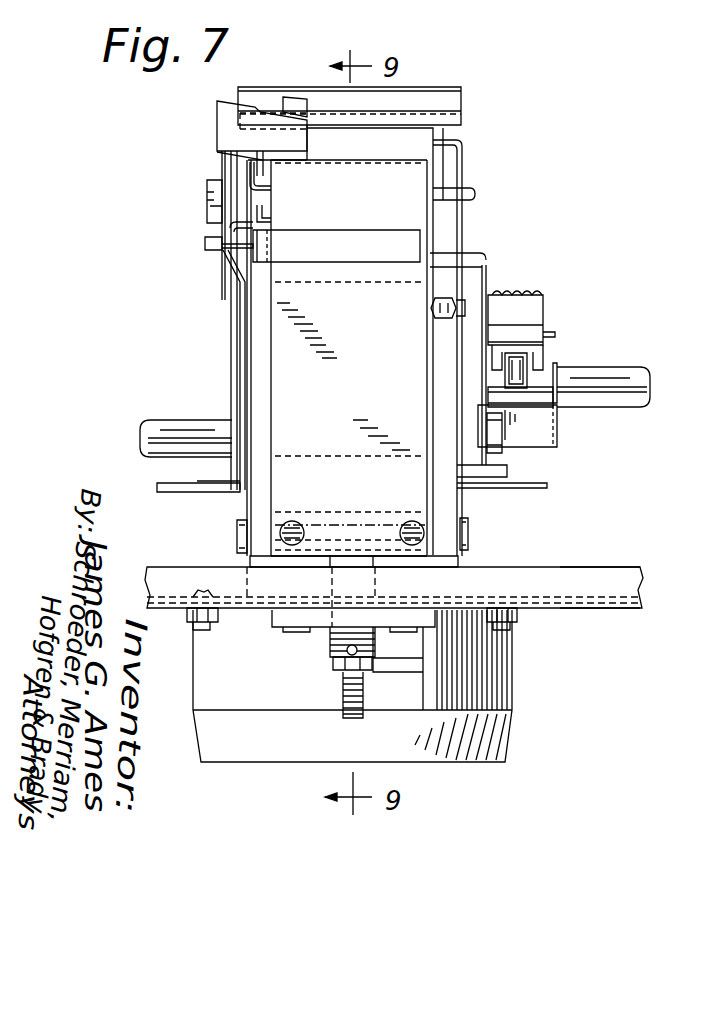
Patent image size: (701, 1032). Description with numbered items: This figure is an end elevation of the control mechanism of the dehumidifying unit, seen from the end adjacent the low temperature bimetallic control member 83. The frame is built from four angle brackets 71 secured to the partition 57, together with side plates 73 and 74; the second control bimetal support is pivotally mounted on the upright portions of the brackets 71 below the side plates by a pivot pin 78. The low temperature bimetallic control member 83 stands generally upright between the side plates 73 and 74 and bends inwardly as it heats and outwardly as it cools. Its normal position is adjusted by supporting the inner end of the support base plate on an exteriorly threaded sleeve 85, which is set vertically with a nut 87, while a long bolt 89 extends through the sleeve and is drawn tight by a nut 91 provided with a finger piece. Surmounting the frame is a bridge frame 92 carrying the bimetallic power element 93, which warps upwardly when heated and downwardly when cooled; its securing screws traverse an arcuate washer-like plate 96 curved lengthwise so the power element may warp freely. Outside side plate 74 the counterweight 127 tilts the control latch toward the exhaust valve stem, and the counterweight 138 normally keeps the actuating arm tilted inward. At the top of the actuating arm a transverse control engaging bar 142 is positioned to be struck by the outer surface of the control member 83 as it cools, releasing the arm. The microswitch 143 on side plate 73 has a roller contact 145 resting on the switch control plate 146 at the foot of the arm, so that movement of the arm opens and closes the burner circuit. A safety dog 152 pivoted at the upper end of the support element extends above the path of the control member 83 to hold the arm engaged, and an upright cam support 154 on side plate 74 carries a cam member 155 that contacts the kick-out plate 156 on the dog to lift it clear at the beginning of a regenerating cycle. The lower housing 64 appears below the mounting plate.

The partition 57 is at (593, 608).
The housing 64 is at (460, 758).
The brackets 71 is at (248, 566).
The side plate 73 is at (463, 472).
The side plate 74 is at (238, 477).
The pivot pin 78 is at (470, 532).
The low temperature bimetallic control member 83 is at (378, 177).
The exteriorly threaded sleeve 85 is at (330, 651).
The nut 87 is at (322, 624).
The long bolt 89 is at (345, 715).
The nut 91 is at (389, 668).
The bridge frame 92 is at (463, 152).
The bimetallic power element 93 is at (420, 154).
The arcuate washer-like plate 96 is at (448, 104).
The counterweight 127 is at (203, 390).
The counterweight 138 is at (625, 373).
The control engaging bar 142 is at (410, 241).
The microswitch 143 is at (533, 303).
The roller contact 145 is at (520, 403).
The switch control plate 146 is at (535, 387).
The safety dog 152 is at (300, 77).
The cam support 154 is at (237, 327).
The cam member 155 is at (222, 155).
The kick-out plate 156 is at (226, 126).